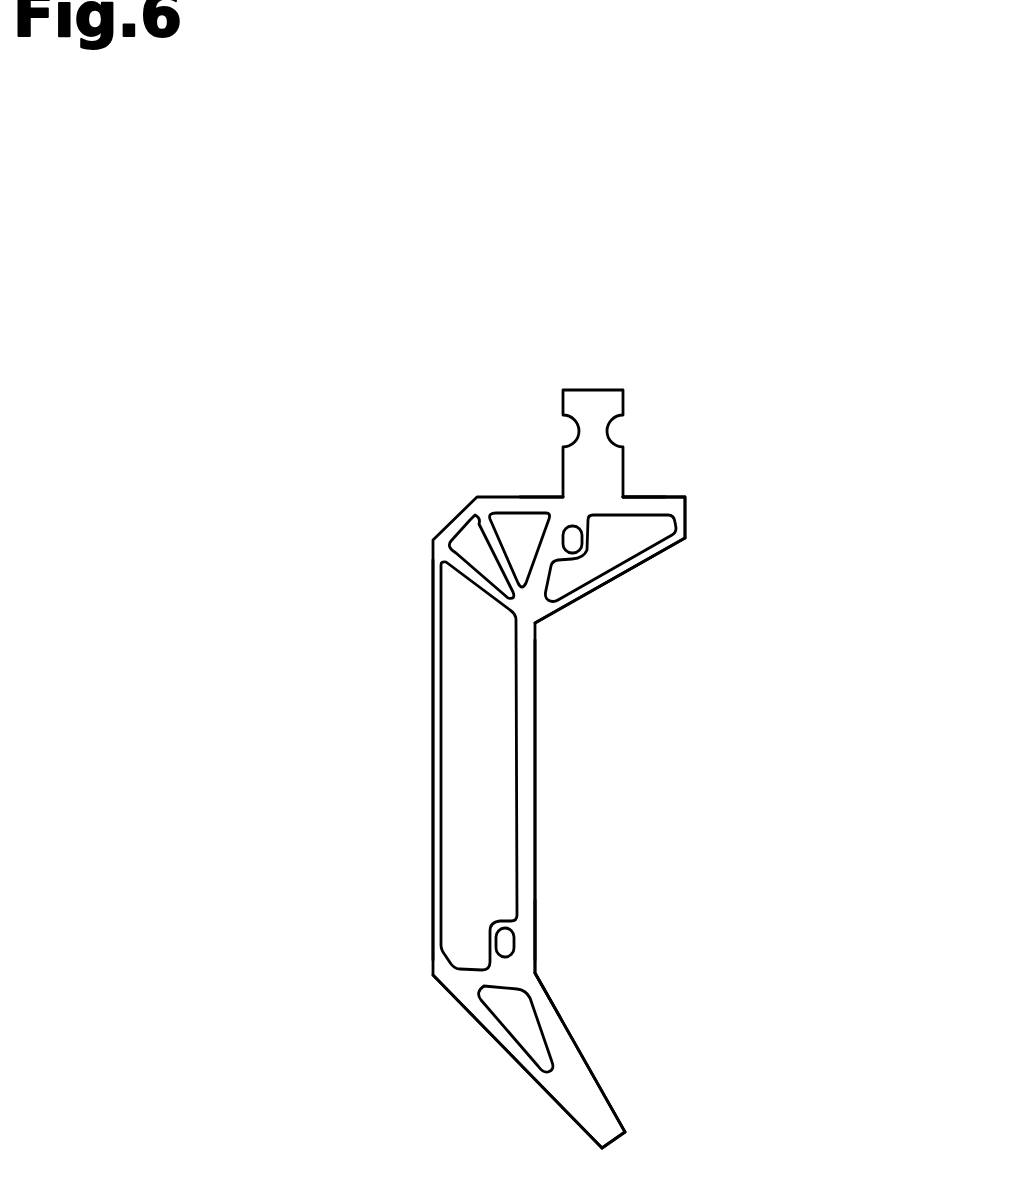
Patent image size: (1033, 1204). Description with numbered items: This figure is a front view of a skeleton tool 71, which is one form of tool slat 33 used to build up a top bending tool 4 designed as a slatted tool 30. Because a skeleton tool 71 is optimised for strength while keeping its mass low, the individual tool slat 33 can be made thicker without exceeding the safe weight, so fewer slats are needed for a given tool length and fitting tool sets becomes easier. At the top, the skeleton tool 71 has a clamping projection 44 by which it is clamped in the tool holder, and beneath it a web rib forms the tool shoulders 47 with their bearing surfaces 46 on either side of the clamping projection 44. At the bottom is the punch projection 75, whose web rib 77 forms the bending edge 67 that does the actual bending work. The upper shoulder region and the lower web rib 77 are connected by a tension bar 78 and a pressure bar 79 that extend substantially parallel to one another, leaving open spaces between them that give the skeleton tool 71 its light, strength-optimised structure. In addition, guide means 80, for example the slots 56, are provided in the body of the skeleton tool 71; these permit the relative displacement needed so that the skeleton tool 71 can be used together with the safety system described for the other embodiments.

The top bending tool 4 is at (372, 818).
The slatted tool 30 is at (387, 885).
The tool slat 33 is at (423, 1017).
The clamping projection 44 is at (583, 470).
The bearing surfaces 46 is at (545, 485).
The tool shoulders 47 is at (740, 492).
The slots 56 is at (512, 940).
The bending edge 67 is at (597, 1165).
The skeleton tool 71 is at (702, 637).
The punch projection 75 is at (657, 1098).
The web rib 77 is at (610, 1000).
The tension bar 78 is at (433, 717).
The pressure bar 79 is at (530, 777).
The guide means 80 is at (575, 562).